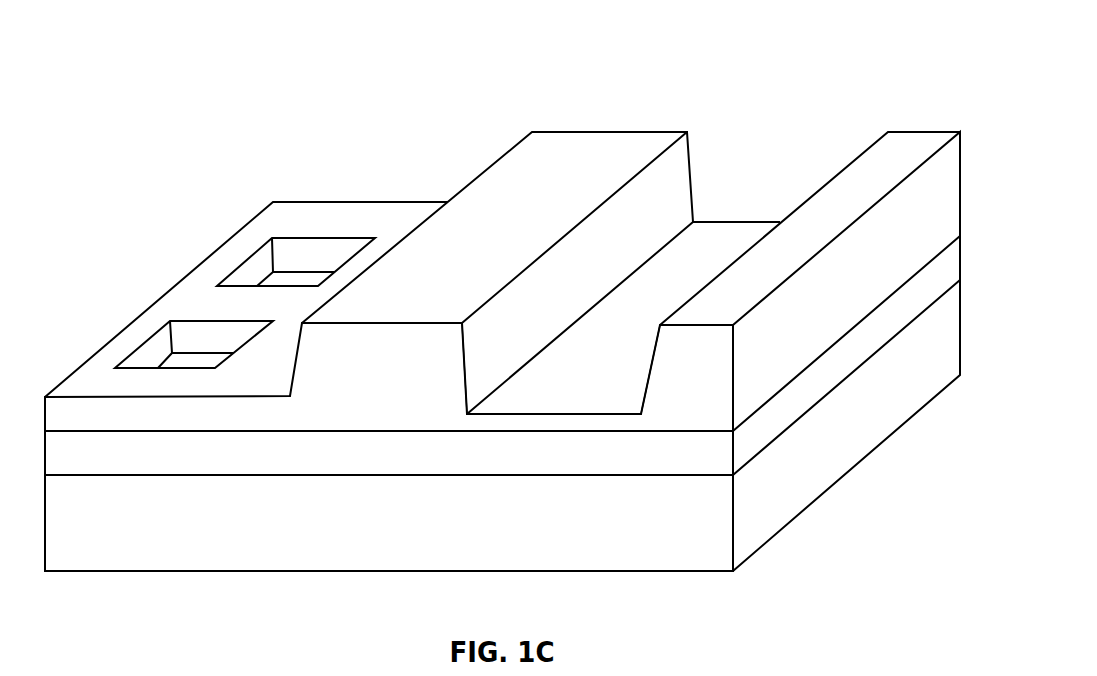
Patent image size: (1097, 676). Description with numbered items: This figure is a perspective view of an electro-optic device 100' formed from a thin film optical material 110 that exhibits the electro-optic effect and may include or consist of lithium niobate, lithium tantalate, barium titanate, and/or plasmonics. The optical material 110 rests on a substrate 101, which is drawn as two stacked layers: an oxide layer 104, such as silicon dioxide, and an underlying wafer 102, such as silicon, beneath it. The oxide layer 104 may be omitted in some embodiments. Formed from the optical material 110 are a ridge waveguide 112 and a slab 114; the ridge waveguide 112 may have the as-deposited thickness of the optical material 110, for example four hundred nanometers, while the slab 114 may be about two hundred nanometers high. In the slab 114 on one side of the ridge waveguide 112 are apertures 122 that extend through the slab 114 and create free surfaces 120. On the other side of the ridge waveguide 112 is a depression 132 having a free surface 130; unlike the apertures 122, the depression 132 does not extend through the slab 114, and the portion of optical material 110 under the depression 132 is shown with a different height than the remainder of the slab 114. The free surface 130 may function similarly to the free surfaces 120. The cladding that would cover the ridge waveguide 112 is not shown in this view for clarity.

The electro-optic device 100' is at (389, 300).
The substrate 101 is at (748, 513).
The underlying wafer 102 is at (355, 522).
The oxide layer 104 is at (355, 461).
The optical material 110 is at (337, 387).
The ridge waveguide 112 is at (422, 383).
The slab 114 is at (97, 440).
The free surfaces 120 is at (268, 263).
The apertures 122 is at (193, 333).
The free surface 130 is at (822, 172).
The depression 132 is at (758, 178).